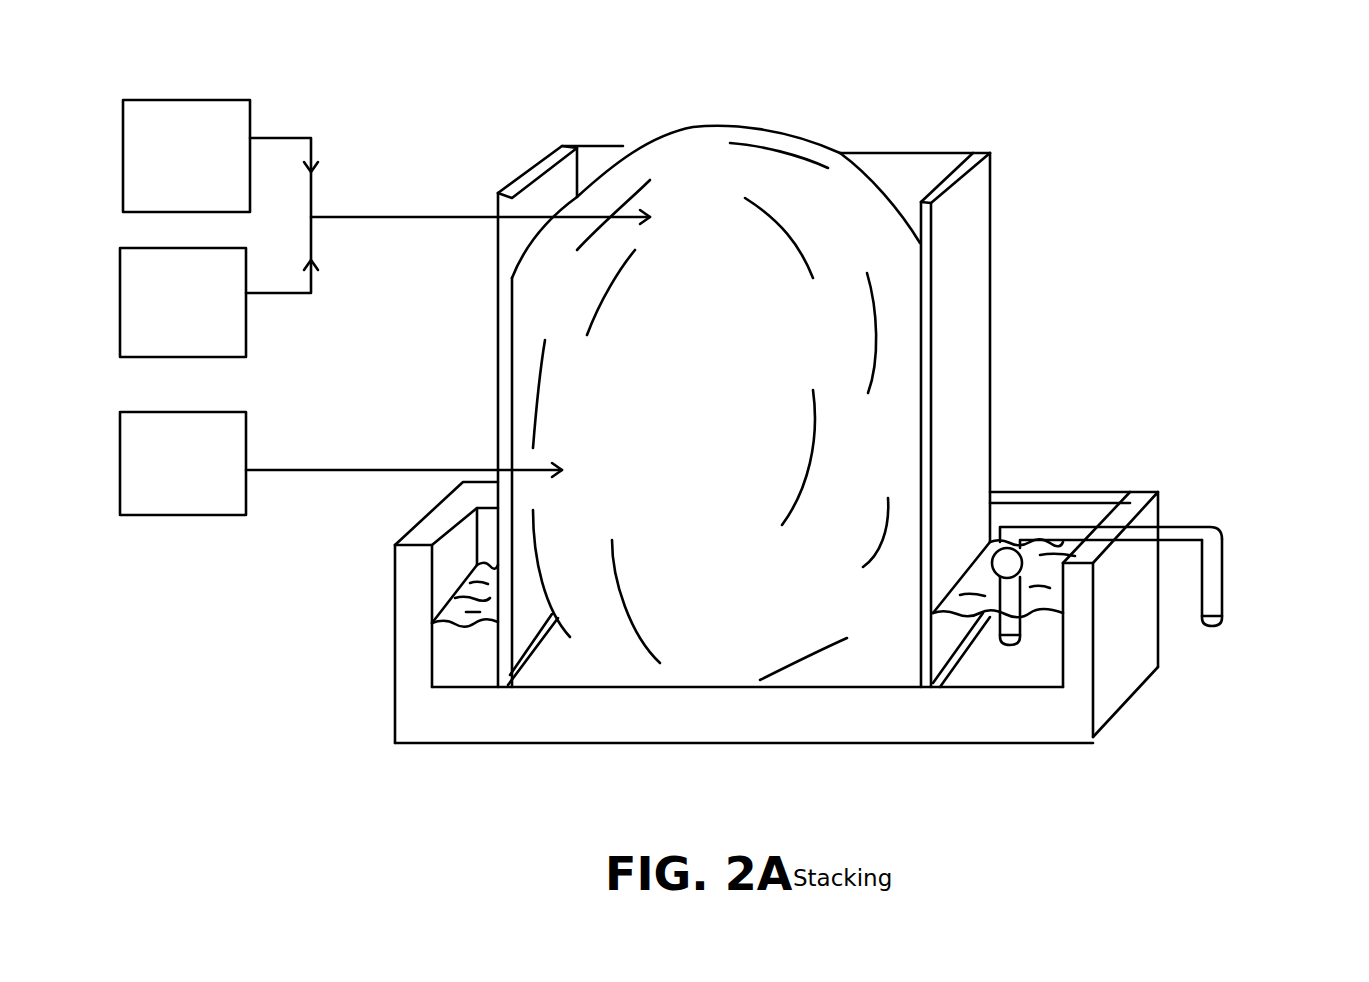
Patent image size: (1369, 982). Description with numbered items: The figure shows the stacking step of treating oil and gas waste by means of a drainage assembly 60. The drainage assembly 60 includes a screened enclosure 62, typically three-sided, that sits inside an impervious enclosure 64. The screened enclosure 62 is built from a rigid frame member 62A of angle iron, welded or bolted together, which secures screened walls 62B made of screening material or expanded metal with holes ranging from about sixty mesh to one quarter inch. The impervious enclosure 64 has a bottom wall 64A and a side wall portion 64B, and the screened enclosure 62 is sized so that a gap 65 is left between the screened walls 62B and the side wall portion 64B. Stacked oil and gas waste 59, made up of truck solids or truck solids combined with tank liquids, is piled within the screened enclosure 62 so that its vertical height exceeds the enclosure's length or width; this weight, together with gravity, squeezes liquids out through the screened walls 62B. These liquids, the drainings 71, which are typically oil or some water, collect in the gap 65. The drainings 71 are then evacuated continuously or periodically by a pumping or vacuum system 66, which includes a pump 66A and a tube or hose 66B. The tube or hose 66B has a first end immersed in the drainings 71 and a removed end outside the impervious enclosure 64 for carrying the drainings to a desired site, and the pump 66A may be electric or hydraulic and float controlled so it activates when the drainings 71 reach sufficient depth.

The drainage assembly 60 is at (400, 150).
The stacked oil and gas waste 59 is at (909, 150).
The screened enclosure 62 is at (1072, 420).
The rigid frame member 62A is at (993, 185).
The screened walls 62B is at (959, 335).
The drainings 71 is at (462, 667).
The impervious enclosure 64 is at (801, 673).
The bottom wall 64A is at (880, 712).
The side wall portion 64B is at (1118, 613).
The gap 65 is at (1042, 515).
The pumping or vacuum system 66 is at (1168, 501).
The pump 66A is at (1050, 542).
The tube or hose 66B is at (1228, 610).